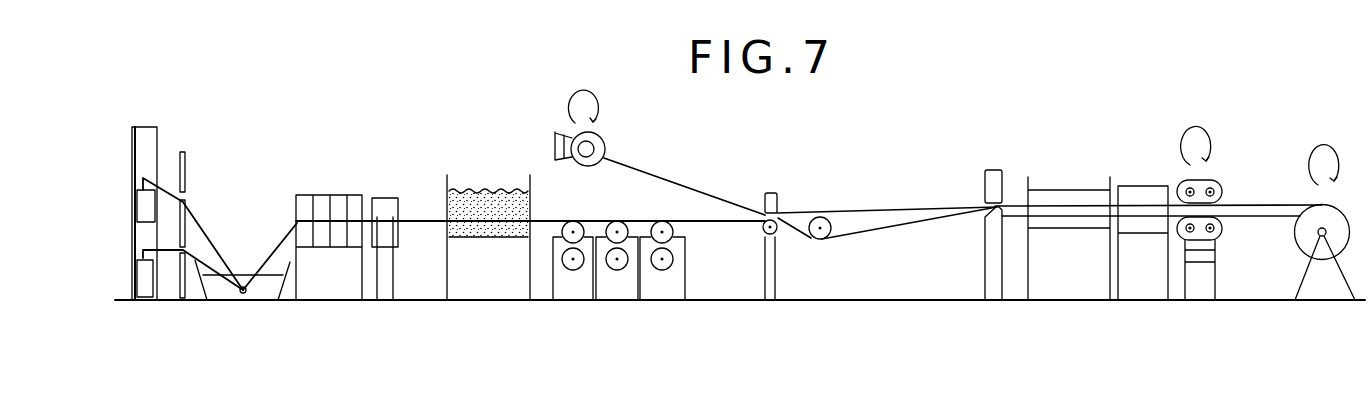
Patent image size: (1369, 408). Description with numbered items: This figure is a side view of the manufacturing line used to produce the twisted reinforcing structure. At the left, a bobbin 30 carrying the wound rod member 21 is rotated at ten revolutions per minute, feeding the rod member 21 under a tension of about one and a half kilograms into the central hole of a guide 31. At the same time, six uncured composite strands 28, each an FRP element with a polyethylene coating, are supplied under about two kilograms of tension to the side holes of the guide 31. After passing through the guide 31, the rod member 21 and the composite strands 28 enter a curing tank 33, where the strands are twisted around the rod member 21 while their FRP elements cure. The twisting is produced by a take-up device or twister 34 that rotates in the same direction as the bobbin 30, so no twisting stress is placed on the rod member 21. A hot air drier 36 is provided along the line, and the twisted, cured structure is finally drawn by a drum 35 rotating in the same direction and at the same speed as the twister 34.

The rod member 21 is at (661, 178).
The composite strand 28 is at (747, 224).
The bobbin 30 is at (606, 137).
The guide 31 is at (770, 192).
The curing tank 33 is at (1070, 283).
The take-up device or twister 34 is at (1200, 288).
The drum 35 is at (1325, 285).
The hot air drier 36 is at (1143, 282).